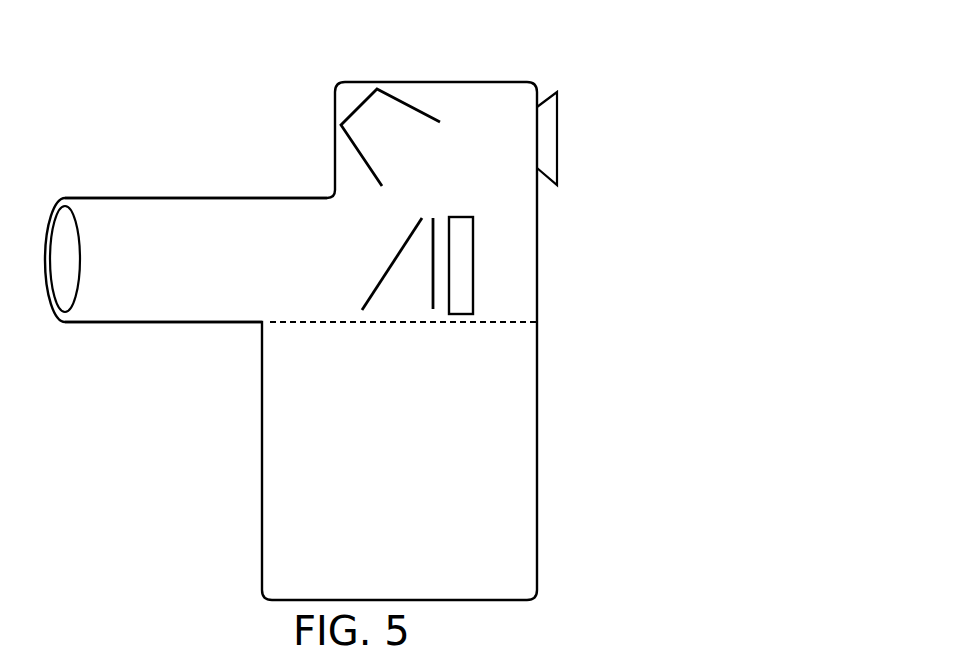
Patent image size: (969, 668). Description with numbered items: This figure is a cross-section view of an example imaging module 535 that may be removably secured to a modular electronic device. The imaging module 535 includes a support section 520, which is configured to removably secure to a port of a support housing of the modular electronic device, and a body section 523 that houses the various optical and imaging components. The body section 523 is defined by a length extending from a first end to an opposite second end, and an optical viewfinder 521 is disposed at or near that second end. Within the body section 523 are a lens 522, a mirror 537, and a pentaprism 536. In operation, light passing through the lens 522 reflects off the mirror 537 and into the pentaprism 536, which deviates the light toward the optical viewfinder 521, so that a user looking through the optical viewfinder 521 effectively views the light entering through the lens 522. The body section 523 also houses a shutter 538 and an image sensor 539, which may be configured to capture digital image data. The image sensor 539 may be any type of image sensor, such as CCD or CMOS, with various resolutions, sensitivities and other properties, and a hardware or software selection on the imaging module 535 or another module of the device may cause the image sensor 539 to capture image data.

The support section 520 is at (492, 428).
The optical viewfinder 521 is at (558, 112).
The lens 522 is at (63, 242).
The body section 523 is at (198, 220).
The imaging module 535 is at (266, 66).
The pentaprism 536 is at (398, 100).
The mirror 537 is at (382, 278).
The shutter 538 is at (432, 230).
The image sensor 539 is at (475, 238).